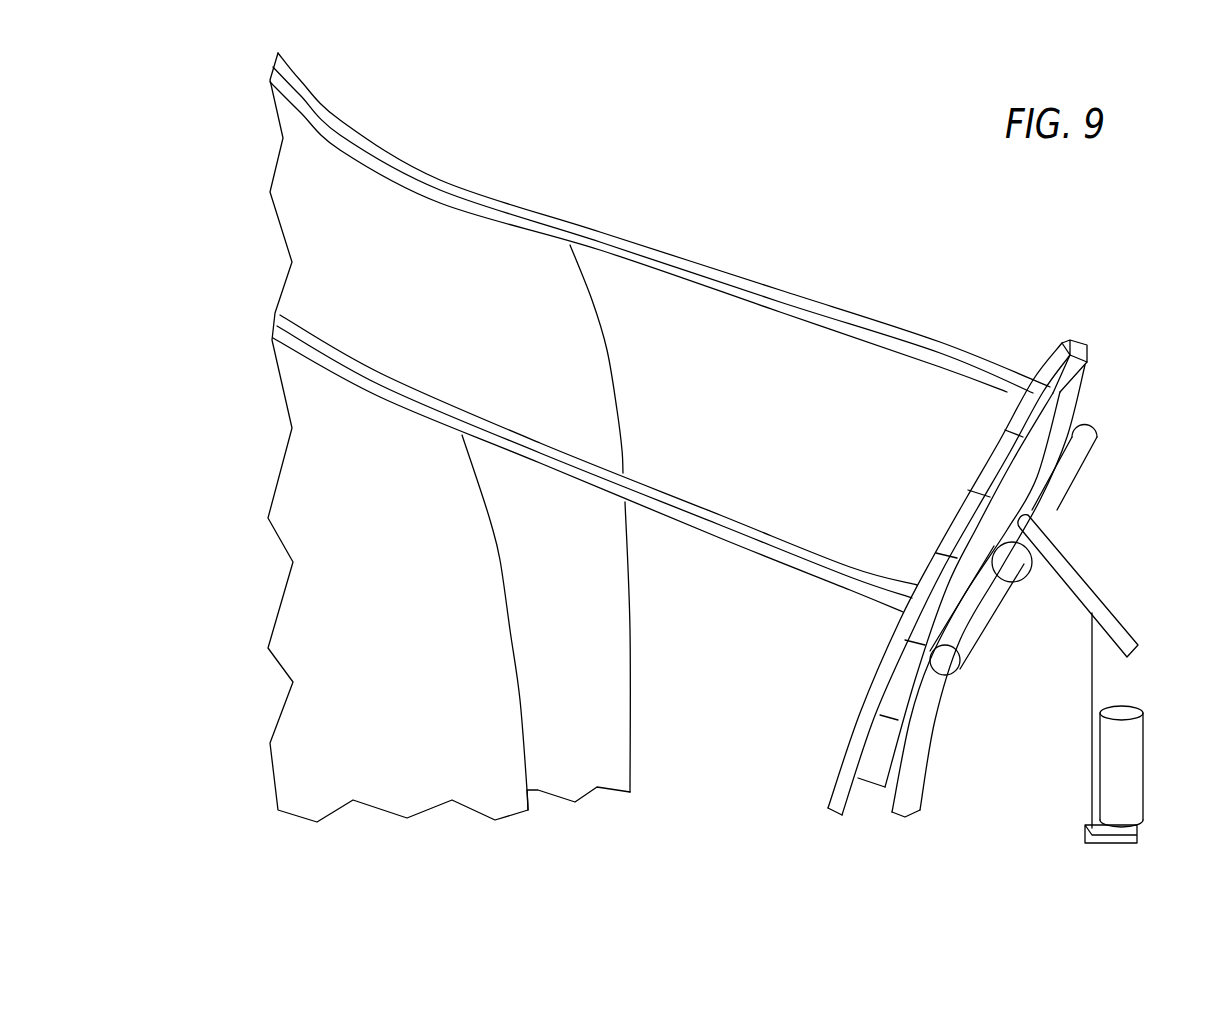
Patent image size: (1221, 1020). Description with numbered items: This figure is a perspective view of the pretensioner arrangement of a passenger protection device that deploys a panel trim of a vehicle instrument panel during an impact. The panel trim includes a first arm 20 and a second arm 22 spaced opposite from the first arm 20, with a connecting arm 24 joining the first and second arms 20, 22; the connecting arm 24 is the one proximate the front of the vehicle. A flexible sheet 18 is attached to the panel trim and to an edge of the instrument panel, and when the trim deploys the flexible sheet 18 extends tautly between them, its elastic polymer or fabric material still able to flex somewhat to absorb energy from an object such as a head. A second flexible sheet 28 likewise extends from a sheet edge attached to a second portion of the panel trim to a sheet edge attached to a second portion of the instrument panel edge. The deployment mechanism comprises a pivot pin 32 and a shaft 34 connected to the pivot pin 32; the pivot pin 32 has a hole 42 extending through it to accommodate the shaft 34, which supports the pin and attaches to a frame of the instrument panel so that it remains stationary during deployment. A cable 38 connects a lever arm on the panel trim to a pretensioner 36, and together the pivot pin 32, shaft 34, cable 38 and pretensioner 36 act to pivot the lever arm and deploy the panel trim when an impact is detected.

The flexible sheet 18 is at (557, 355).
The first arm 20 is at (738, 280).
The second arm 22 is at (692, 508).
The connecting arm 24 is at (1060, 412).
The second flexible sheet 28 is at (322, 608).
The pivot pin 32 is at (1032, 580).
The shaft 34 is at (945, 663).
The pretensioner 36 is at (1143, 773).
The cable 38 is at (1092, 713).
The hole 42 is at (1020, 583).